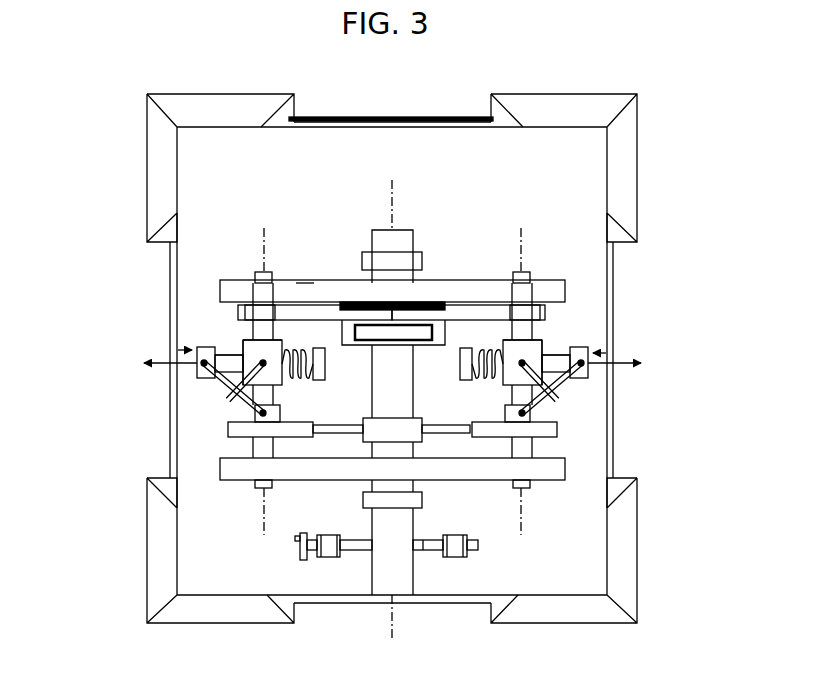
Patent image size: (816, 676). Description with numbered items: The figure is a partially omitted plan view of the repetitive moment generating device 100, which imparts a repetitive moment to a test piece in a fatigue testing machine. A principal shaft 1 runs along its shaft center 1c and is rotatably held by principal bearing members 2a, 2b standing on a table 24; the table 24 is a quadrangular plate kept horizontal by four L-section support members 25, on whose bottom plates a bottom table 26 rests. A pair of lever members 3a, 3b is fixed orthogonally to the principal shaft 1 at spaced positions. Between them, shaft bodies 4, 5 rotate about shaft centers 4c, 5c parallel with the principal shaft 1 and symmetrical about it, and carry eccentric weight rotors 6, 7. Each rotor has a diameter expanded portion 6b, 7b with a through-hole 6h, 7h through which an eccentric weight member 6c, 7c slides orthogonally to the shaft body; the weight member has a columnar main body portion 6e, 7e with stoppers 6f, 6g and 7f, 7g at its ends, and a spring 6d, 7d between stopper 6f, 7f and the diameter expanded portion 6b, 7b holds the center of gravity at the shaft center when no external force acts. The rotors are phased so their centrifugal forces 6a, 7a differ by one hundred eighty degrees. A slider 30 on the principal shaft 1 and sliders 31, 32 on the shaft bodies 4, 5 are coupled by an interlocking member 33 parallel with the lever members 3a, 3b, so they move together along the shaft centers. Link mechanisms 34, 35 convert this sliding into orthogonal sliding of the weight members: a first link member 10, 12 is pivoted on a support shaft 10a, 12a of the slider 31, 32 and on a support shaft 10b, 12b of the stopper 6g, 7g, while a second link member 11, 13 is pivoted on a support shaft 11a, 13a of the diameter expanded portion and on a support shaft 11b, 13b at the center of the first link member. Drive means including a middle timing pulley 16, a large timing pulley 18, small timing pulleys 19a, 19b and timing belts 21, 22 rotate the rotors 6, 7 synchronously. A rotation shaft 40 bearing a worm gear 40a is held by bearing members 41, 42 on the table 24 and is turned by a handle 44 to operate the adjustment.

The repetitive moment generating device 100 is at (108, 137).
The principal shaft 1 is at (407, 229).
The shaft center of principal shaft 1c is at (390, 196).
The principal bearing member 2a is at (362, 257).
The principal bearing member 2b is at (363, 500).
The lever member 3a is at (460, 280).
The lever member 3b is at (567, 471).
The shaft body 4 is at (254, 277).
The shaft center of shaft body 4c is at (263, 230).
The shaft body 5 is at (530, 279).
The shaft center of shaft body 5c is at (521, 230).
The eccentric weight rotor 6 is at (250, 340).
The centrifugal force 6a is at (150, 372).
The diameter expanded portion 6b is at (250, 338).
The eccentric weight member 6c is at (185, 350).
The spring 6d is at (284, 347).
The main body portion 6e is at (243, 350).
The stopper 6f is at (318, 364).
The stopper 6g is at (200, 384).
The through-hole 6h is at (258, 360).
The eccentric weight rotor 7 is at (577, 300).
The centrifugal force 7a is at (600, 359).
The diameter expanded portion 7b is at (540, 310).
The eccentric weight member 7c is at (605, 353).
The spring 7d is at (505, 345).
The main body portion 7e is at (560, 340).
The stopper 7f is at (462, 366).
The stopper 7g is at (575, 348).
The through-hole 7h is at (575, 345).
The first link member 10 is at (225, 399).
The support shaft 10a is at (268, 441).
The support shaft 10b is at (195, 353).
The second link member 11 is at (280, 386).
The support shaft 11a is at (280, 303).
The support shaft 11b is at (235, 403).
The first link member 12 is at (555, 396).
The support shaft 12a is at (520, 413).
The support shaft 12b is at (590, 381).
The second link member 13 is at (512, 386).
The support shaft 13a is at (500, 305).
The support shaft 13b is at (562, 389).
The middle timing pulley 16 is at (405, 350).
The large timing pulley 18 is at (420, 300).
The small timing pulley 19a is at (520, 305).
The small timing pulley 19b is at (243, 308).
The timing belt 21 is at (358, 328).
The timing belt 22 is at (305, 281).
The table 24 is at (397, 121).
The support member 25 is at (146, 187).
The bottom table 26 is at (332, 116).
The slider 30 is at (400, 418).
The slider 31 is at (285, 421).
The slider 32 is at (485, 423).
The interlocking member 33 is at (340, 418).
The link mechanism 34 is at (228, 407).
The link mechanism 35 is at (557, 409).
The rotation shaft 40 is at (362, 553).
The worm gear 40a is at (420, 546).
The bearing member 41 is at (330, 558).
The bearing member 42 is at (458, 558).
The handle 44 is at (296, 546).